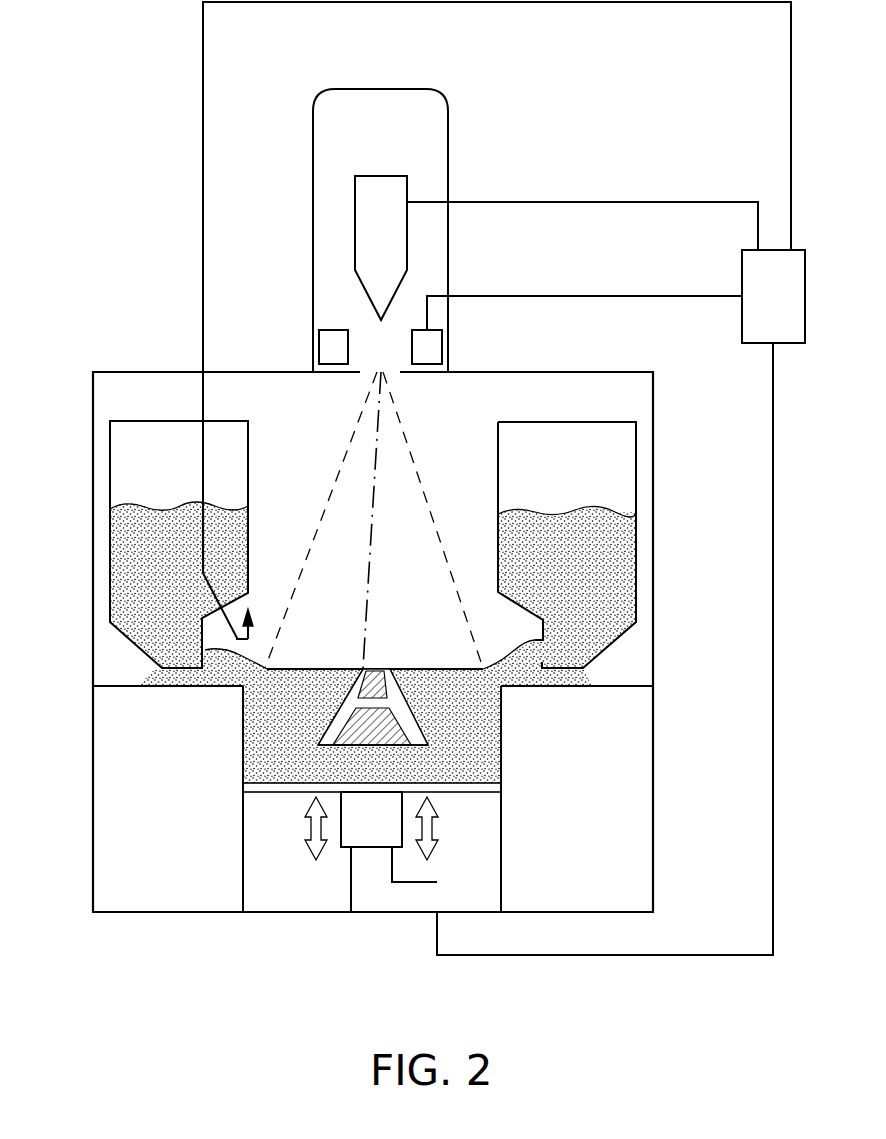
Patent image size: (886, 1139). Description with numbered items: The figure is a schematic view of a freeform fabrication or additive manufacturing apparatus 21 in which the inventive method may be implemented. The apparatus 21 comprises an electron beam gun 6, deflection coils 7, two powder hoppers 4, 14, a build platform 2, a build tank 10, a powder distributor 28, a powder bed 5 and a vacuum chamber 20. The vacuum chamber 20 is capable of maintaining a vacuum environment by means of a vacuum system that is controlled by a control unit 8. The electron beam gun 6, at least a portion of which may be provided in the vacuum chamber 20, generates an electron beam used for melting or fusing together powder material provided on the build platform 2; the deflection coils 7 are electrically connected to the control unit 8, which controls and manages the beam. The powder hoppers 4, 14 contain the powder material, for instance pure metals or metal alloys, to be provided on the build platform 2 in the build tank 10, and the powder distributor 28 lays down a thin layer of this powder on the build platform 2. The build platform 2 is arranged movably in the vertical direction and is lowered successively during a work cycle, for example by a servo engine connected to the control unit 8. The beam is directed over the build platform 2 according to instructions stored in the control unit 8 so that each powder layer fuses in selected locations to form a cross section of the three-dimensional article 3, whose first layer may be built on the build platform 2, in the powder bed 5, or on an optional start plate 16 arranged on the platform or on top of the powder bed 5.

The build platform 2 is at (292, 793).
The three-dimensional article 3 is at (345, 707).
The powder hopper 4 is at (180, 558).
The powder bed 5 is at (463, 705).
The electron beam gun 6 is at (365, 238).
The deflection coils 7 is at (328, 348).
The control unit 8 is at (621, 602).
The build tank 10 is at (242, 845).
The powder hopper 14 is at (582, 560).
The start plate 16 is at (417, 760).
The vacuum chamber 20 is at (653, 857).
The additive manufacturing apparatus 21 is at (630, 104).
The powder distributor 28 is at (247, 648).